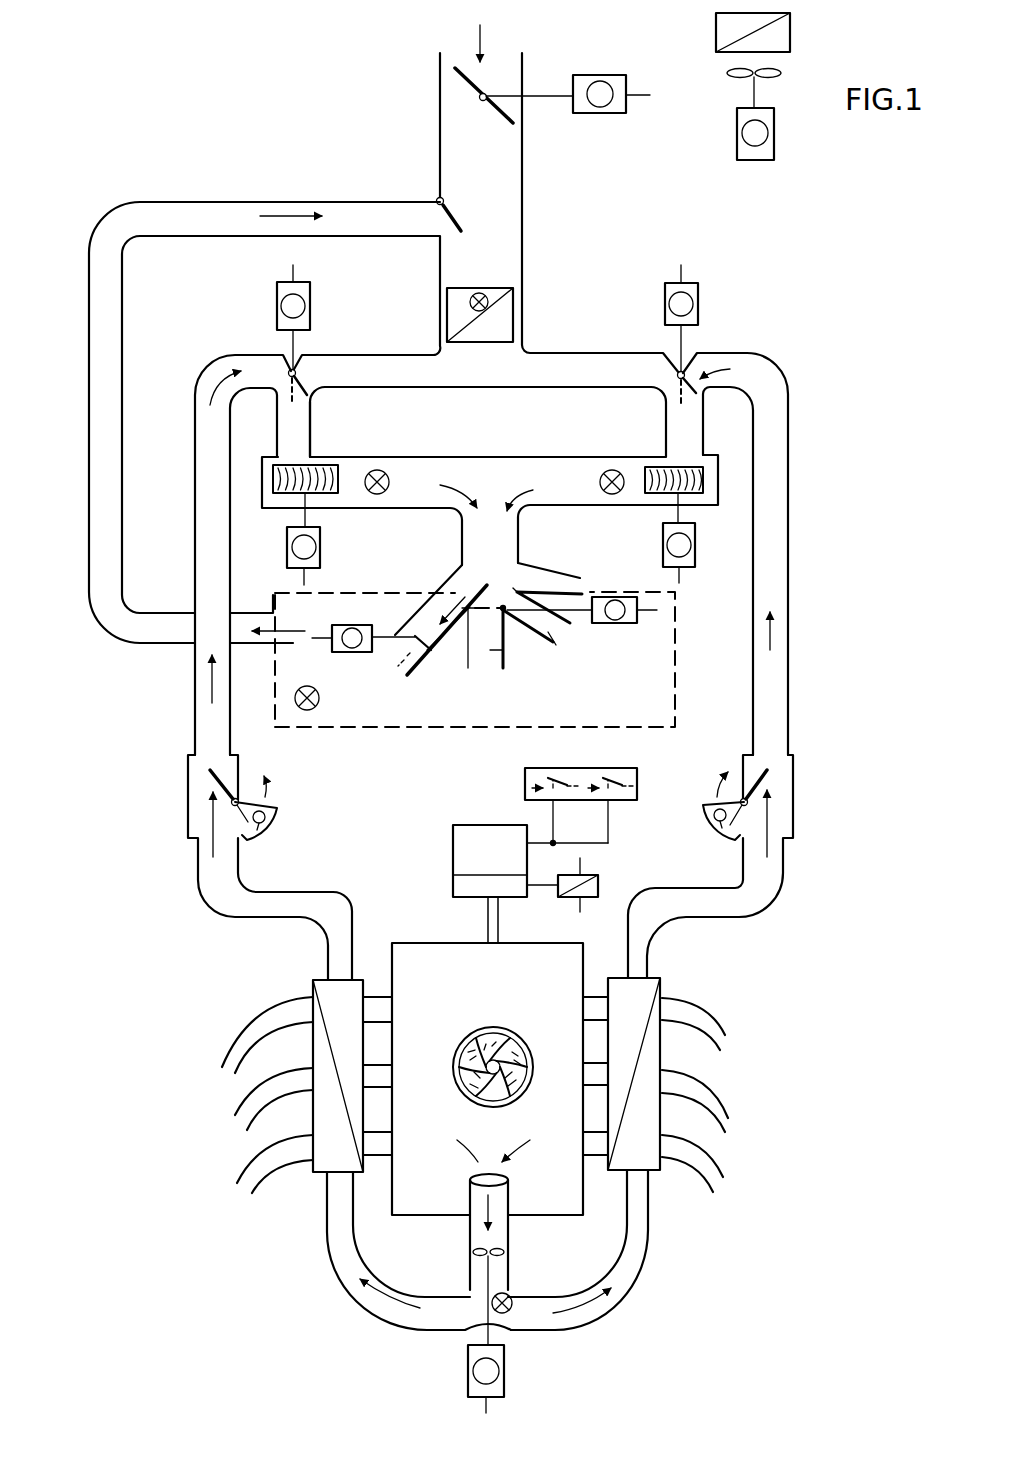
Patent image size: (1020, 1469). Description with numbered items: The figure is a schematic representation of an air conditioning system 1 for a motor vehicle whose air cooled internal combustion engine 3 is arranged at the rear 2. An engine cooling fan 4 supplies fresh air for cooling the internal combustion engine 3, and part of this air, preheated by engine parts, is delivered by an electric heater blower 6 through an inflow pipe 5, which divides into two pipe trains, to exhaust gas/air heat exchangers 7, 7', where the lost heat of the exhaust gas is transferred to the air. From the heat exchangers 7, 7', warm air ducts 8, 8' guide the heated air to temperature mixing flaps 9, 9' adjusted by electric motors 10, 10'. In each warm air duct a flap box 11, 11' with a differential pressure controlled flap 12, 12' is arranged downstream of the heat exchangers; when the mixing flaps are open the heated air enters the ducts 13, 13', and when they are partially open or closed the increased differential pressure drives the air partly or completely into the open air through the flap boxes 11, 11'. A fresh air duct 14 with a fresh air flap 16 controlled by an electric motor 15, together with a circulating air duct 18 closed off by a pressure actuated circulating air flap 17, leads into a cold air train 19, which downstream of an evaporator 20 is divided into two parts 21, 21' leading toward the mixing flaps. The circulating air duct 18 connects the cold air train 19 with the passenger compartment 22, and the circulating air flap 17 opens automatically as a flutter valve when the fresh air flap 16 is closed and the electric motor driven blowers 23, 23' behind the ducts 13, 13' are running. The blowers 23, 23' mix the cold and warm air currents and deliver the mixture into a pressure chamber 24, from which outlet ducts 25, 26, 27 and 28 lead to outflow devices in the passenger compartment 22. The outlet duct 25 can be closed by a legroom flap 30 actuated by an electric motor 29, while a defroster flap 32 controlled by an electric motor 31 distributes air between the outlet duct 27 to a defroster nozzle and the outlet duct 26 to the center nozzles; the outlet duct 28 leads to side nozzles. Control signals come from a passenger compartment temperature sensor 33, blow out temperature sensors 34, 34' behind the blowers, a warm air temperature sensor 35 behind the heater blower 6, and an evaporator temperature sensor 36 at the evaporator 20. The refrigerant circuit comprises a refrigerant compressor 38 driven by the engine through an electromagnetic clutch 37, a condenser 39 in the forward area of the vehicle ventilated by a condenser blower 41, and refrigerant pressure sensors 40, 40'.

The air conditioning system 1 is at (748, 252).
The rear 2 is at (185, 1146).
The internal combustion engine 3 is at (410, 1190).
The engine cooling fan 4 is at (495, 1032).
The inflow pipe 5 is at (466, 1250).
The heater blower 6 is at (508, 1253).
The exhaust gas/air heat exchanger 7 is at (655, 1079).
The exhaust gas/air heat exchanger 7' is at (307, 1080).
The warm air duct 8 is at (652, 1042).
The warm air duct 8' is at (354, 1042).
The temperature mixing flap 9 is at (538, 363).
The temperature mixing flap 9' is at (275, 405).
The electric motor 10 is at (708, 319).
The electric motor 10' is at (265, 316).
The flap box 11 is at (735, 556).
The flap box 11' is at (243, 565).
The differential pressure controlled flap 12 is at (769, 810).
The differential pressure controlled flap 12' is at (207, 813).
The duct 13 is at (488, 422).
The duct 13' is at (332, 429).
The fresh air duct 14 is at (434, 88).
The electric motor 15 is at (600, 113).
The fresh air flap 16 is at (495, 117).
The circulating air flap 17 is at (437, 213).
The circulating air duct 18 is at (223, 196).
The cold air train 19 is at (492, 252).
The evaporator 20 is at (505, 315).
The part of cold air train 21 is at (569, 402).
The part of cold air train 21' is at (406, 414).
The passenger compartment 22 is at (375, 730).
The blower 23 is at (694, 525).
The blower 23' is at (288, 526).
The pressure chamber 24 is at (437, 468).
The outlet duct 25 is at (425, 648).
The outlet duct 26 is at (503, 655).
The outlet duct 27 is at (553, 645).
The outlet duct 28 is at (570, 577).
The electric motor 29 is at (352, 652).
The legroom flap 30 is at (423, 623).
The electric motor 31 is at (633, 623).
The defroster flap 32 is at (514, 591).
The passenger compartment temperature sensor 33 is at (310, 711).
The blow out temperature sensor 34 is at (595, 507).
The blow out temperature sensor 34' is at (385, 516).
The warm air temperature sensor 35 is at (513, 1305).
The evaporator temperature sensor 36 is at (470, 292).
The electromagnetic clutch 37 is at (535, 898).
The refrigerant compressor 38 is at (453, 840).
The condenser 39 is at (777, 35).
The refrigerant pressure sensor 40 is at (579, 791).
The refrigerant pressure sensor 40' is at (624, 790).
The condenser blower 41 is at (776, 133).